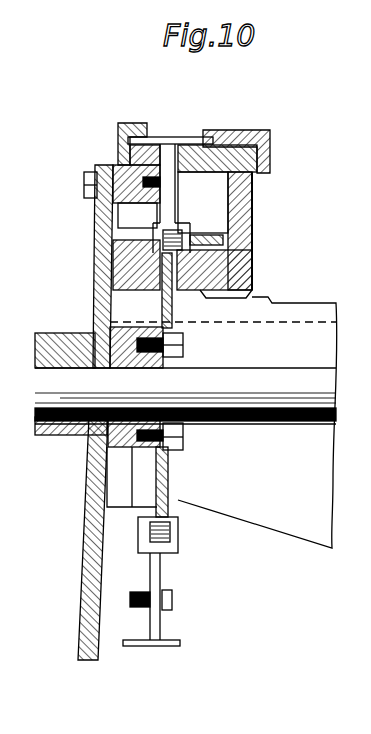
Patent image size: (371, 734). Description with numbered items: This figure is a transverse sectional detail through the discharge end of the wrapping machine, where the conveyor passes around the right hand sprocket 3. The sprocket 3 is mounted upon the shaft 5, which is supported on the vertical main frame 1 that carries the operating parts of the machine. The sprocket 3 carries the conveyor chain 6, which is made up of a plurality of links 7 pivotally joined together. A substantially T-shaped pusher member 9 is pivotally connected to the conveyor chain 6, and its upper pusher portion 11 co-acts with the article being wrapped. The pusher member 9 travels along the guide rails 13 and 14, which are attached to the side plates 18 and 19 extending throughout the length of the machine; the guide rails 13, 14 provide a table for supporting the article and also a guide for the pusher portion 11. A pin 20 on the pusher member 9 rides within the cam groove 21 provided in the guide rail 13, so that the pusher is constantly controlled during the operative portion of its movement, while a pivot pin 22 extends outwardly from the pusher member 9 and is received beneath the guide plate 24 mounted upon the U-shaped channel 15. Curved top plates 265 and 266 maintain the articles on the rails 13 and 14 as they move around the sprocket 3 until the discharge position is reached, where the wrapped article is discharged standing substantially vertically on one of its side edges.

The main frame 1 is at (285, 310).
The sprocket 3 is at (170, 488).
The shaft 5 is at (276, 372).
The conveyor chain 6 is at (168, 536).
The link 7 is at (188, 253).
The pusher member 9 is at (183, 95).
The pusher portion 11 is at (181, 137).
The guide rail 13 is at (104, 222).
The guide rail 14 is at (203, 173).
The channel 15 is at (143, 343).
The side plate 18 is at (95, 278).
The side plate 19 is at (248, 227).
The pin 20 is at (145, 403).
The cam groove 21 is at (84, 181).
The pivot pin 22 is at (221, 249).
The guide plate 24 is at (252, 206).
The curved top plate 265 is at (119, 133).
The curved top plate 266 is at (248, 133).